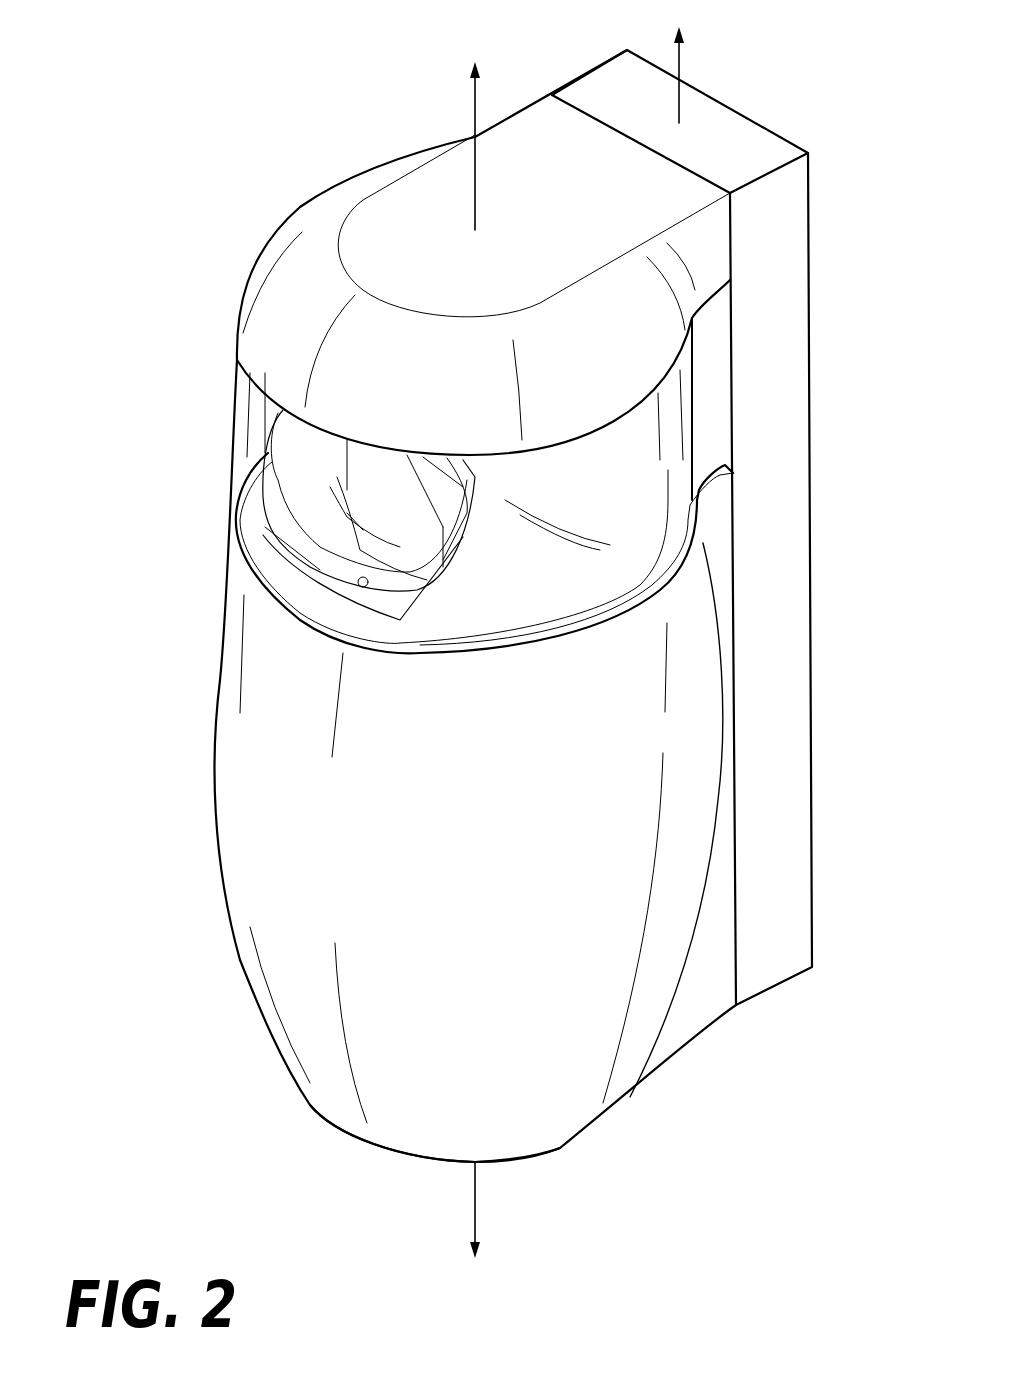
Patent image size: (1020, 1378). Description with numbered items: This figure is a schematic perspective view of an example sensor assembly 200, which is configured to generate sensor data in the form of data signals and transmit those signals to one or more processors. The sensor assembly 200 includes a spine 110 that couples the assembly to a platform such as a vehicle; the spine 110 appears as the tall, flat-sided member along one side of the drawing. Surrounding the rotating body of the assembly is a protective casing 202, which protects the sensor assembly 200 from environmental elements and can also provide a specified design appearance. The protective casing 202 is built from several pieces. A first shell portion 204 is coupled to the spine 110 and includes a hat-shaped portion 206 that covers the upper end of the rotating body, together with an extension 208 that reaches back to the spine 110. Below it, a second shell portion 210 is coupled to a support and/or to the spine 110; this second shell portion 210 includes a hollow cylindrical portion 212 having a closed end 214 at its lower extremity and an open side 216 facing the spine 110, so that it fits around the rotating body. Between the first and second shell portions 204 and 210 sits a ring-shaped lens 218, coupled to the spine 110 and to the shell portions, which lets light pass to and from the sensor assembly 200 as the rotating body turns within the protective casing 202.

The sensor assembly 200 is at (144, 92).
The spine 110 is at (809, 287).
The extension 208 is at (717, 237).
The first shell portion 204 is at (280, 227).
The hat-shaped portion 206 is at (353, 267).
The lens 218 is at (250, 455).
The protective casing 202 is at (157, 727).
The second shell portion 210 is at (246, 897).
The hollow cylindrical portion 212 is at (462, 838).
The closed end 214 is at (367, 1145).
The open side 216 is at (727, 882).